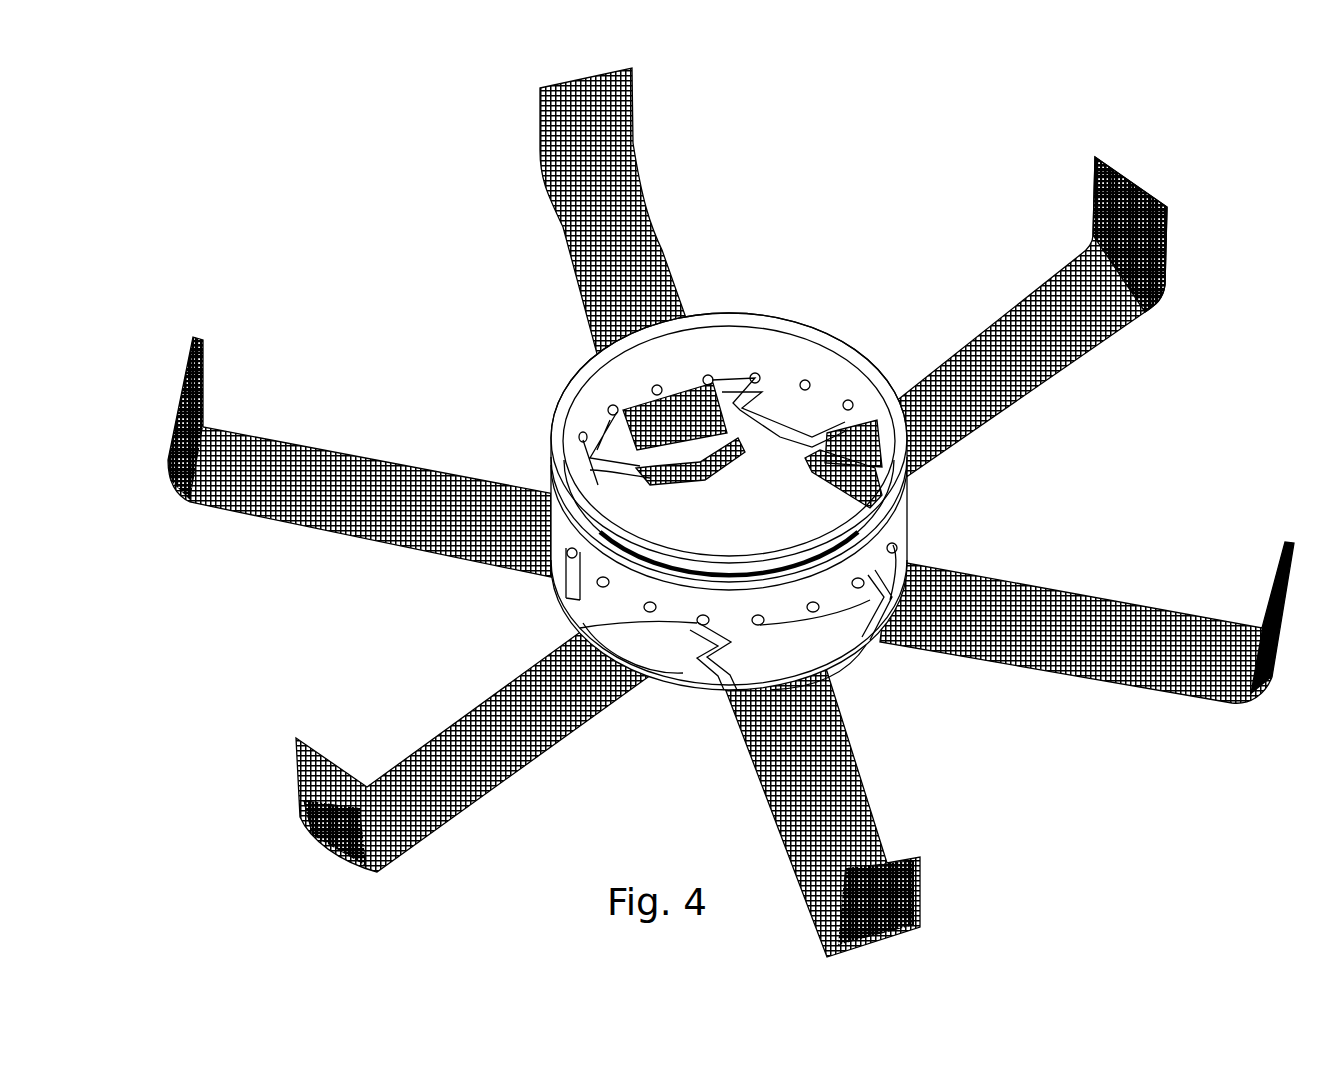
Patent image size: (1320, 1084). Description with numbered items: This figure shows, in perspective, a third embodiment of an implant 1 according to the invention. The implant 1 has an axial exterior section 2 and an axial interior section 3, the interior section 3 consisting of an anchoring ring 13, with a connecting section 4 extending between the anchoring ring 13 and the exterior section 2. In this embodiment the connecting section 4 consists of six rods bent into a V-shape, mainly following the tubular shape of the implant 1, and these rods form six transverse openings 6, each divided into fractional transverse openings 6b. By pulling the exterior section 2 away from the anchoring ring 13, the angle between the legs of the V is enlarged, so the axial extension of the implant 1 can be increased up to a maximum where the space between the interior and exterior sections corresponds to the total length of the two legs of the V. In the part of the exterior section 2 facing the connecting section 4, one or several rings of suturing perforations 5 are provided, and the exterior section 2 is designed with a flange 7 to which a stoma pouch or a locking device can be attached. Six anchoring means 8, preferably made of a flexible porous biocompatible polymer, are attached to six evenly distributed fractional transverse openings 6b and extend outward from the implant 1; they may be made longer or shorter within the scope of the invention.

The implant 1 is at (455, 330).
The axial exterior section 2 is at (810, 345).
The axial interior section 3 is at (555, 606).
The connecting section 4 is at (665, 643).
The suturing perforations 5 is at (806, 396).
The transverse openings 6 is at (840, 630).
The fractional transverse opening 6b is at (690, 465).
The flange 7 is at (560, 440).
The anchoring means 8 is at (1070, 595).
The anchoring ring 13 is at (903, 552).